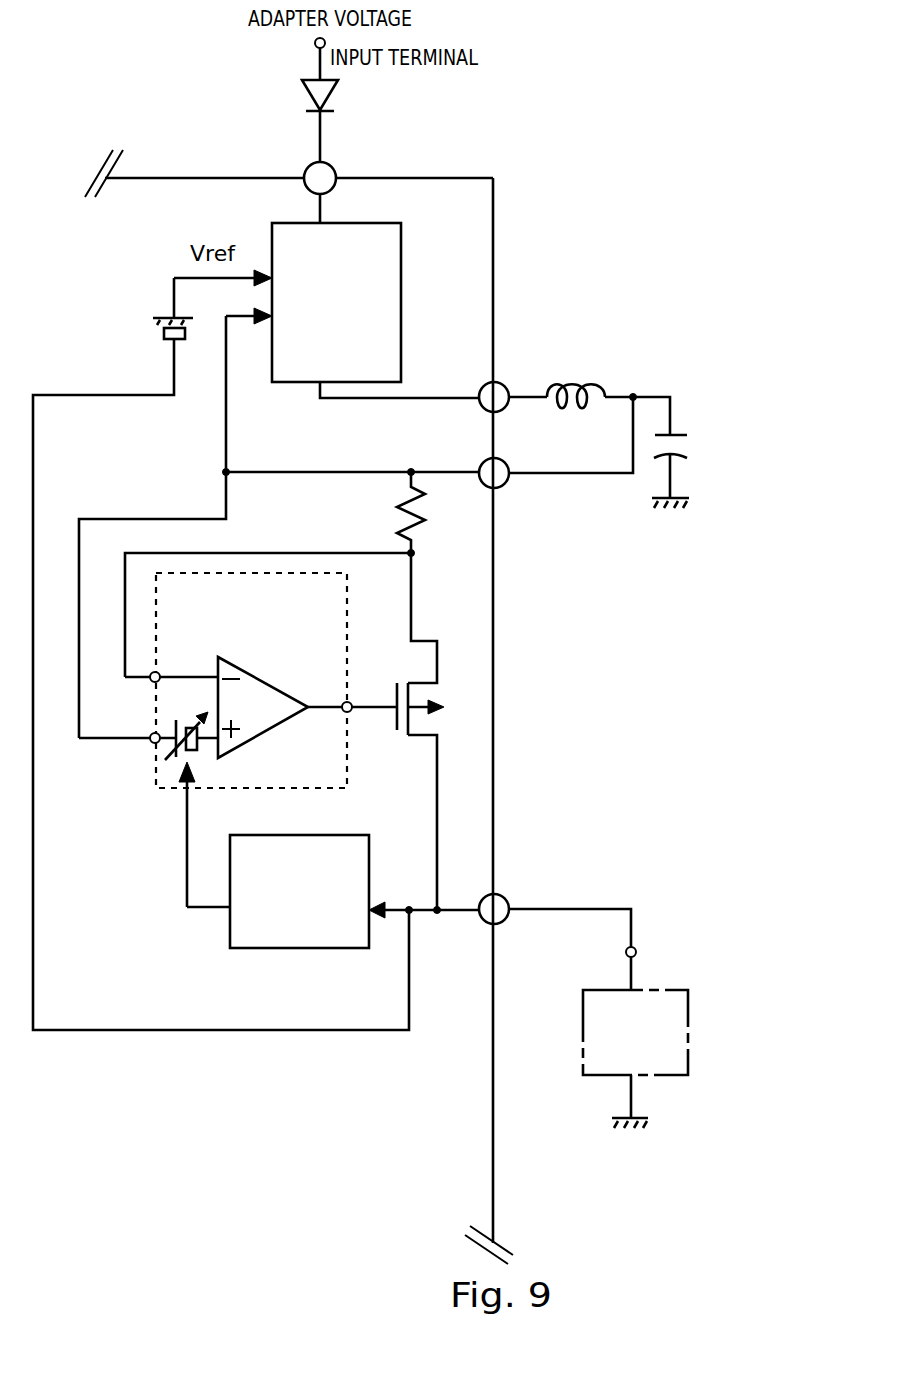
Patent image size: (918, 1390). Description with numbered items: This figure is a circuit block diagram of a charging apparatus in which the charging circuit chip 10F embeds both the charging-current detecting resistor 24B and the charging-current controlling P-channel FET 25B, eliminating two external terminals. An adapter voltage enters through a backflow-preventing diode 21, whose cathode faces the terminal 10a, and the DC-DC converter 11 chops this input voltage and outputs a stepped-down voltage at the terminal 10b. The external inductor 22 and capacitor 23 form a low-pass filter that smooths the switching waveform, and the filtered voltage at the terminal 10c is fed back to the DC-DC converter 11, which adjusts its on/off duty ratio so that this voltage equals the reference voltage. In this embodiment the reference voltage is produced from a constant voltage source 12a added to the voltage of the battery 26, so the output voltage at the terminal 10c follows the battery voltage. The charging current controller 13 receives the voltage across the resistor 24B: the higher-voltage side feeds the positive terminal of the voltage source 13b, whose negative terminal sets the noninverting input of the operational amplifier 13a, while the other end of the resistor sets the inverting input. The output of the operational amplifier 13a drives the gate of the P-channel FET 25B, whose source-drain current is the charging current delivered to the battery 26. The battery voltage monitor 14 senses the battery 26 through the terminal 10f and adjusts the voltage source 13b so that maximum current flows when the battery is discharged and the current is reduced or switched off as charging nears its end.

The diode 21 is at (330, 100).
The external connection terminal 10a is at (333, 167).
The charging circuit chip 10F is at (494, 203).
The DC-DC converter 11 is at (401, 255).
The constant voltage source 12a is at (163, 330).
The external connection terminal 10b is at (505, 384).
The external connection terminal 10c is at (509, 467).
The inductor 22 is at (600, 383).
The capacitor 23 is at (688, 447).
The resistor 24B is at (396, 509).
The charging current controller 13 is at (348, 640).
The operational amplifier 13a is at (253, 740).
The voltage source 13b is at (177, 762).
The P-channel field effect transistor 25B is at (417, 738).
The battery voltage monitor 14 is at (343, 948).
The external connection terminal 10f is at (506, 898).
The battery 26 is at (688, 1010).